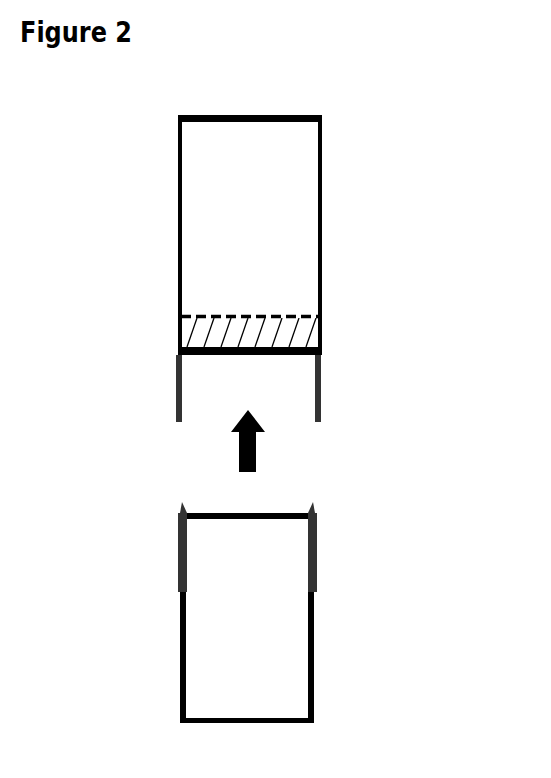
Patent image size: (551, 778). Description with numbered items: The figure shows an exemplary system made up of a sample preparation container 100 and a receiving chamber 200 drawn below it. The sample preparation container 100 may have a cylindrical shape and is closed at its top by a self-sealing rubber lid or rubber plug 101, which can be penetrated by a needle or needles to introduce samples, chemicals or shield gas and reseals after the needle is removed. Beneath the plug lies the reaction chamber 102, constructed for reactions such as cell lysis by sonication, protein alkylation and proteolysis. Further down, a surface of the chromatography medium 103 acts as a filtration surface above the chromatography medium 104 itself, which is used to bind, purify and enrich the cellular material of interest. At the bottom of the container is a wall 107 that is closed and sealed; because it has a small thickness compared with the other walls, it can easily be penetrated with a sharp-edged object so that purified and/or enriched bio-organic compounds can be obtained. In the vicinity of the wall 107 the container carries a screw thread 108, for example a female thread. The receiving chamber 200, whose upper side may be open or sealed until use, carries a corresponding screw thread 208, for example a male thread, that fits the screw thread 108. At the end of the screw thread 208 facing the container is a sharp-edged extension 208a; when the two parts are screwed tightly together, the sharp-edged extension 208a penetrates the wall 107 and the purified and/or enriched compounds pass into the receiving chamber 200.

The sample preparation container 100 is at (355, 297).
The self-sealing rubber lid or rubber plug 101 is at (322, 119).
The reaction chamber 102 is at (308, 185).
The surface of the chromatography medium 103 is at (270, 317).
The chromatography medium 104 is at (302, 333).
The wall 107 is at (288, 355).
The screw thread 108 is at (177, 388).
The receiving chamber 200 is at (338, 657).
The screw thread 208 is at (180, 550).
The sharp-edged extension 208a is at (180, 507).